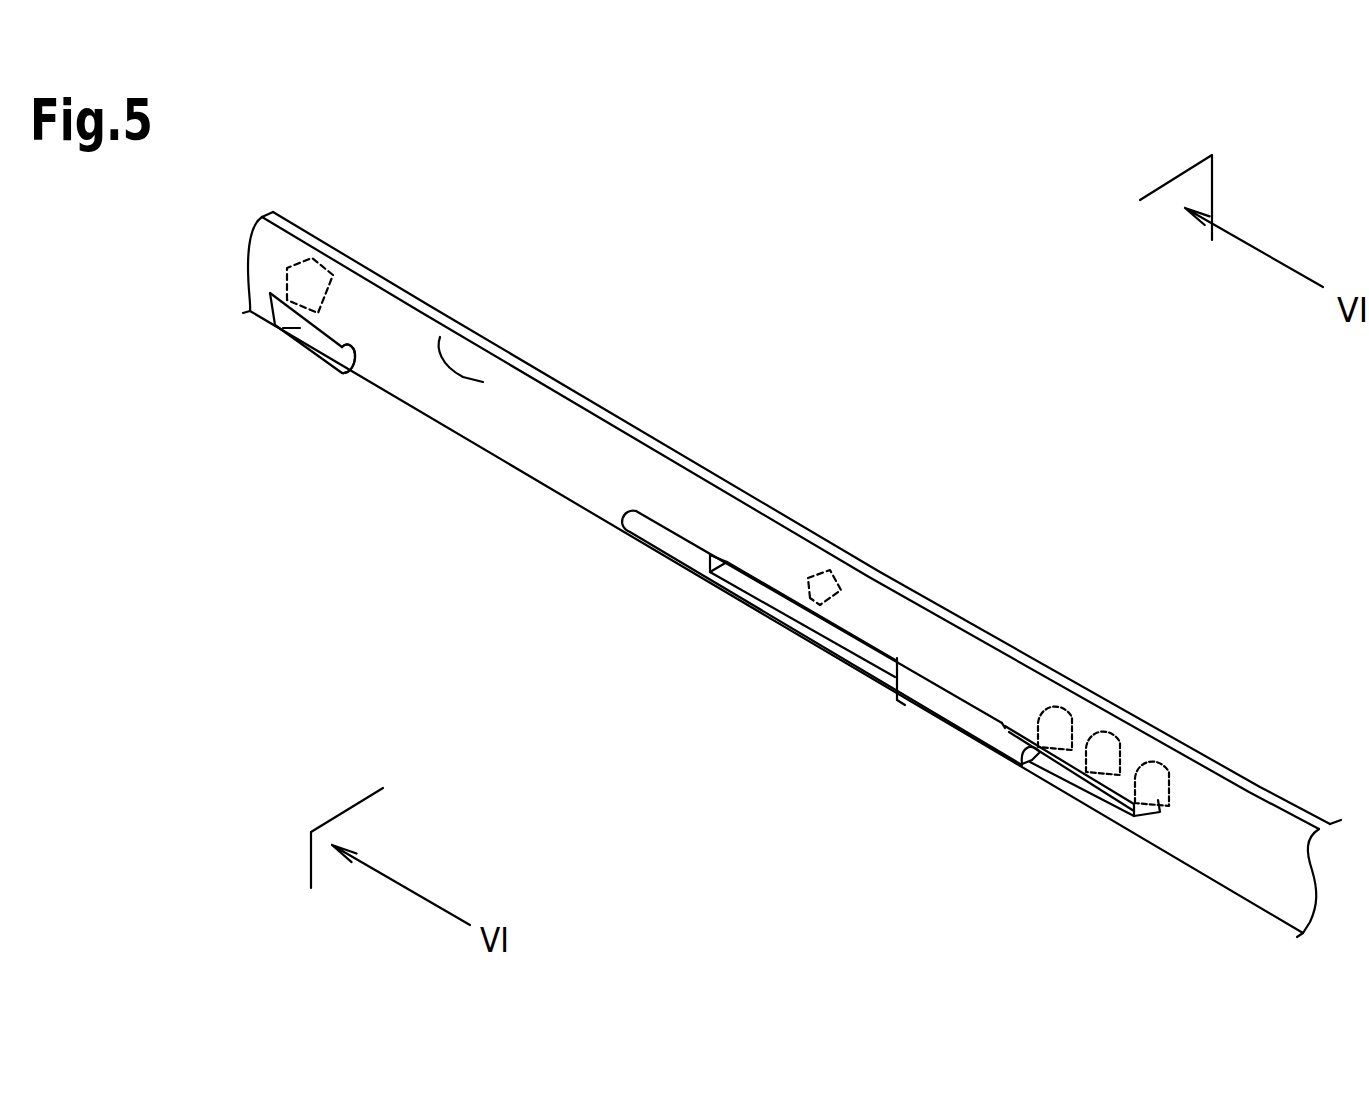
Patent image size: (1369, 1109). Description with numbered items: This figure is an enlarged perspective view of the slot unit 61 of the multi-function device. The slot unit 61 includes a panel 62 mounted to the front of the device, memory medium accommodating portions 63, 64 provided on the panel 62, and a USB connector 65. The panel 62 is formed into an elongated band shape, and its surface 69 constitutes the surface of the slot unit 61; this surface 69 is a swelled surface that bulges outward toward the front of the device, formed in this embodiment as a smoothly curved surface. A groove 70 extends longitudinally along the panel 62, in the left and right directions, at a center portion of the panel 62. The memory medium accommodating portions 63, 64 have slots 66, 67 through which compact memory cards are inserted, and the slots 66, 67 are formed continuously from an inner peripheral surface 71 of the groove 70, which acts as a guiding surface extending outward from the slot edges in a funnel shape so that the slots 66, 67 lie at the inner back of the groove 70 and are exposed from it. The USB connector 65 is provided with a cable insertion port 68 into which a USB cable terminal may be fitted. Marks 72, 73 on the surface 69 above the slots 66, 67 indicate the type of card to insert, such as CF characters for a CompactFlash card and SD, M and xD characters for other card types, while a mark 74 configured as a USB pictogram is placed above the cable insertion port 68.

The slot unit 61 is at (450, 508).
The panel 62 is at (557, 467).
The memory medium accommodating portion 63 is at (897, 697).
The memory medium accommodating portion 64 is at (1157, 812).
The USB connector 65 is at (347, 370).
The slot 66 is at (810, 620).
The slot 67 is at (1072, 775).
The cable insertion port 68 is at (280, 327).
The surface 69 is at (440, 337).
The groove 70 is at (943, 708).
The inner peripheral surface 71 is at (648, 537).
The mark 72 is at (827, 587).
The mark 73 is at (1158, 773).
The mark 74 is at (318, 268).